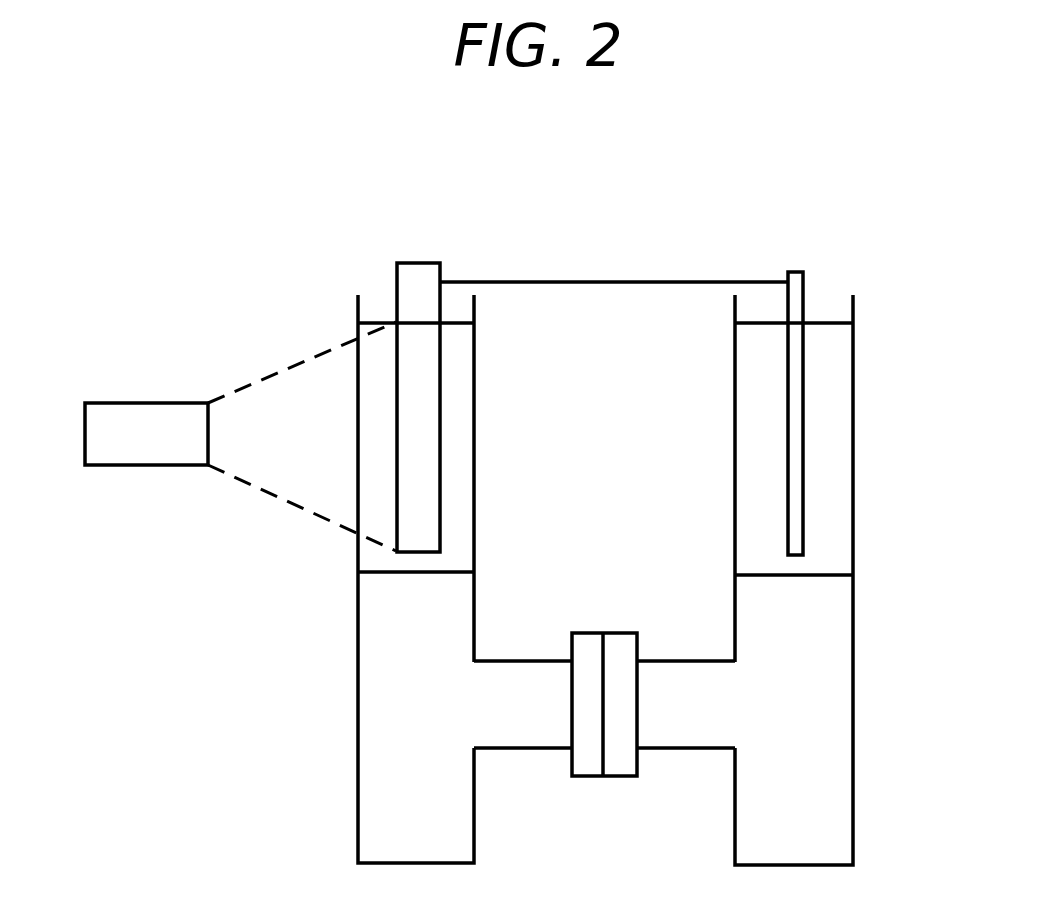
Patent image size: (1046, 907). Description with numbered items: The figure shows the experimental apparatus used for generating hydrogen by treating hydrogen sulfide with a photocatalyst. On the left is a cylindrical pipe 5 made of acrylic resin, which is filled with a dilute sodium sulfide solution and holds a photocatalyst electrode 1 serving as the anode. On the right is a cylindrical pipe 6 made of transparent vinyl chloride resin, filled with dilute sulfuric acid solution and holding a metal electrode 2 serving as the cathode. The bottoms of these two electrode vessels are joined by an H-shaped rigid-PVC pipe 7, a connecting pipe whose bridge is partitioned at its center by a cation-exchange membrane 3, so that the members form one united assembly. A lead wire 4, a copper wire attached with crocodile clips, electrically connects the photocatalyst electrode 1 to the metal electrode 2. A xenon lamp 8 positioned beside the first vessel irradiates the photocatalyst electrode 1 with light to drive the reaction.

The photocatalyst electrode 1 is at (417, 263).
The metal electrode 2 is at (795, 272).
The cation-exchange membrane 3 is at (603, 758).
The lead wire 4 is at (594, 282).
The cylindrical pipe 5 is at (357, 553).
The cylindrical pipe 6 is at (853, 400).
The H-shaped rigid-PVC pipe 7 is at (853, 710).
The xenon lamp 8 is at (146, 403).